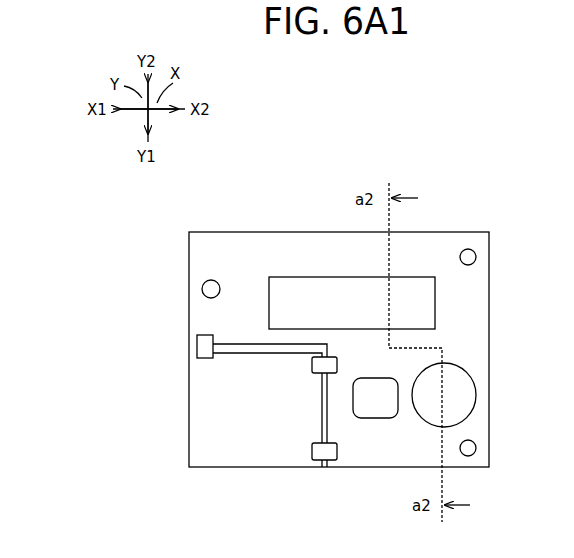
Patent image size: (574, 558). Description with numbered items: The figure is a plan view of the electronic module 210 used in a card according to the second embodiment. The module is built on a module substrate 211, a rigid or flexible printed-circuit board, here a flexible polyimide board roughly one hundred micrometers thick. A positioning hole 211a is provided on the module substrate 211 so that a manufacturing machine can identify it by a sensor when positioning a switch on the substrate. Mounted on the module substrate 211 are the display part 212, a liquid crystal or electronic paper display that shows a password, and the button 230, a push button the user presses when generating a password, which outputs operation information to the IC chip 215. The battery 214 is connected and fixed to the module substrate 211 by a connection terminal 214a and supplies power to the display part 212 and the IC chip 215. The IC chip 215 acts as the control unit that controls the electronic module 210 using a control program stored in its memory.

The electronic module 210 is at (147, 256).
The module substrate 211 is at (259, 246).
The positioning hole 211a is at (476, 255).
The display part 212 is at (420, 276).
The battery 214 is at (196, 424).
The connection terminal 214a is at (196, 358).
The IC chip 215 is at (378, 408).
The button 230 is at (470, 386).